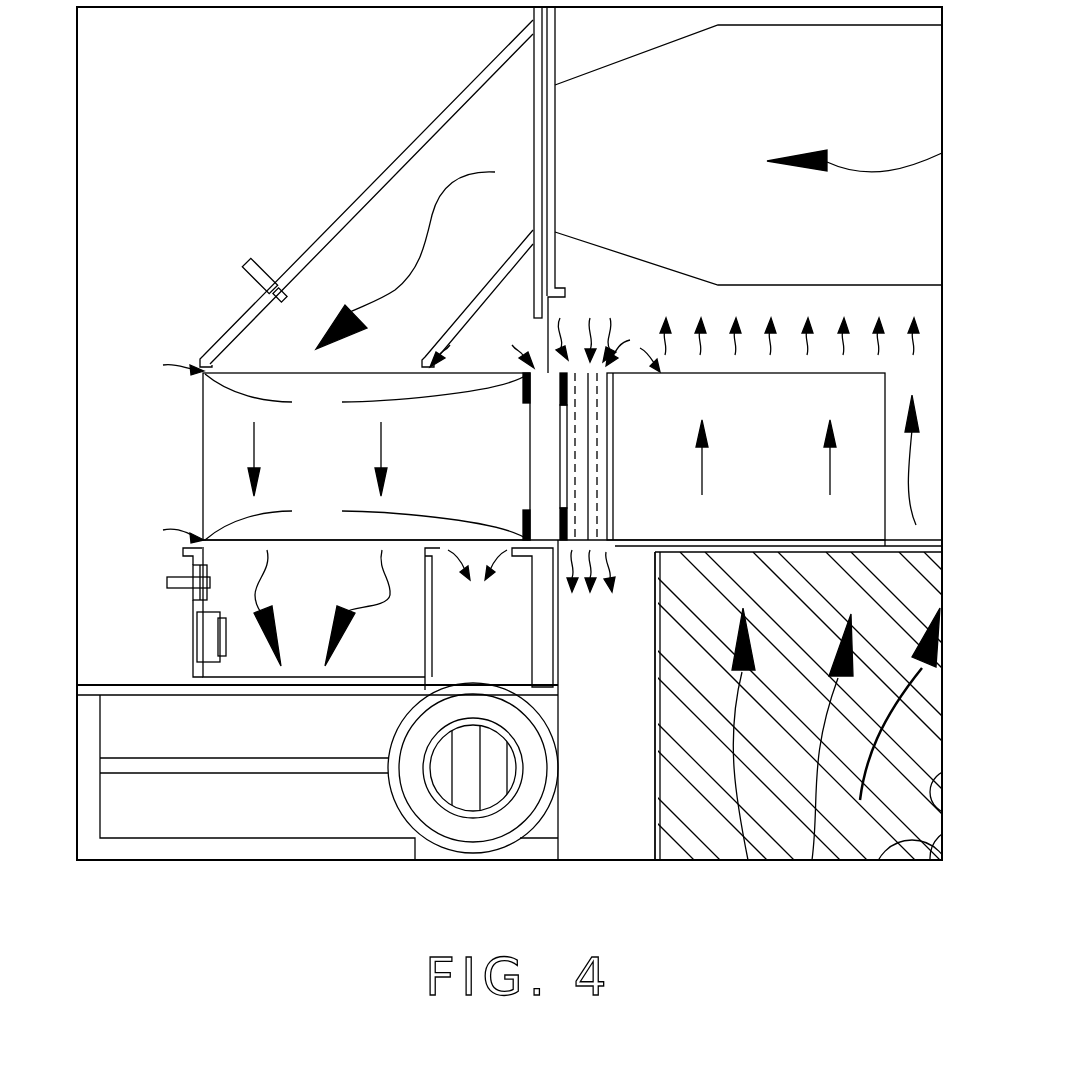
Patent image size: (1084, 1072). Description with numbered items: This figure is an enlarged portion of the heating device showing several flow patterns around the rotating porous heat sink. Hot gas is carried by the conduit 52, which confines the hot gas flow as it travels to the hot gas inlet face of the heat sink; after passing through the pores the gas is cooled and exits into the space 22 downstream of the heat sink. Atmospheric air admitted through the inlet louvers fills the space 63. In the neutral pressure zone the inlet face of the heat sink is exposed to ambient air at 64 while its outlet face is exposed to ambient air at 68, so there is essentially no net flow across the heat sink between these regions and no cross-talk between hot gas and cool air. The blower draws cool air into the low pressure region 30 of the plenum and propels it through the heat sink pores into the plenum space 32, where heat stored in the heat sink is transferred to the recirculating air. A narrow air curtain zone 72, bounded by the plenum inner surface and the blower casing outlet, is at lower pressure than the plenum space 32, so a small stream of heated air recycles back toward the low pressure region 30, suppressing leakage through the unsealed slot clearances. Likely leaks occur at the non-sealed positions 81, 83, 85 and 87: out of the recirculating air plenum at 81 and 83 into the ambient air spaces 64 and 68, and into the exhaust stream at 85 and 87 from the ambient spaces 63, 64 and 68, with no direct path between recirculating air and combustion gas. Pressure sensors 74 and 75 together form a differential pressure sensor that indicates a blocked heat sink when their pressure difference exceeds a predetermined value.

The space downstream of the heat sink 22 is at (335, 590).
The low pressure region of the plenum 30 is at (630, 758).
The plenum space 32 is at (640, 300).
The conduit 52 is at (398, 157).
The space 63 is at (245, 166).
The ambient air 64 is at (524, 339).
The ambient air 68 is at (502, 634).
The air curtain zone 72 is at (600, 548).
The pressure sensor 74 is at (252, 280).
The pressure sensor 75 is at (185, 590).
The non-sealed position 81 is at (548, 375).
The non-sealed position 83 is at (546, 543).
The non-sealed position 85 is at (366, 520).
The non-sealed position 87 is at (366, 397).